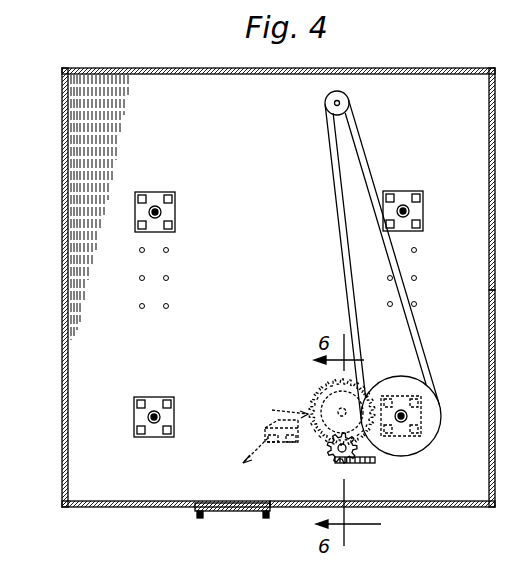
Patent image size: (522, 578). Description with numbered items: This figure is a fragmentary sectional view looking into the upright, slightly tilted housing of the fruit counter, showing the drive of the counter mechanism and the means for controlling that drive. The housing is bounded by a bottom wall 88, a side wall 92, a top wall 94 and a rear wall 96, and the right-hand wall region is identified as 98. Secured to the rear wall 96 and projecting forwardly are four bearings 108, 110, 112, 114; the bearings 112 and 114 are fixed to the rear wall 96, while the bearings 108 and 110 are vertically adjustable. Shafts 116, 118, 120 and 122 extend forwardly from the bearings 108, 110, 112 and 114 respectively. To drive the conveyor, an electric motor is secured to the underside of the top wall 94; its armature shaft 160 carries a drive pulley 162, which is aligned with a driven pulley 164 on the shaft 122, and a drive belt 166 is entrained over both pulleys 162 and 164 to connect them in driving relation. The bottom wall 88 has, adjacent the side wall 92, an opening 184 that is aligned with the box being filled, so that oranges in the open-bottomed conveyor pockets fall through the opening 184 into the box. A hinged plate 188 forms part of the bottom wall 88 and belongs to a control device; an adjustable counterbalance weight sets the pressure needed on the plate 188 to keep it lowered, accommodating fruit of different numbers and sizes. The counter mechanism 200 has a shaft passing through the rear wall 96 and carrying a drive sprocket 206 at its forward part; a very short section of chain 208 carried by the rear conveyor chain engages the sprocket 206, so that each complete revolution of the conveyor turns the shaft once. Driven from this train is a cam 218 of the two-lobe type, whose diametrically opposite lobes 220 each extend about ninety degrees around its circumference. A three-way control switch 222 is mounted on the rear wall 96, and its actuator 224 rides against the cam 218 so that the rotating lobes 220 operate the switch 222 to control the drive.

The bottom wall 88 is at (438, 507).
The side wall 92 is at (65, 340).
The top wall 94 is at (167, 66).
The rear wall 96 is at (477, 122).
The right wall lower portion 98 is at (490, 303).
The bearing 108 is at (175, 196).
The bearing 110 is at (424, 192).
The bearing 112 is at (174, 395).
The bearing 114 is at (430, 397).
The shaft 116 is at (161, 212).
The shaft 118 is at (404, 205).
The shaft 120 is at (153, 410).
The shaft 122 is at (405, 418).
The armature shaft 160 is at (341, 103).
The drive pulley 162 is at (325, 103).
The driven pulley 164 is at (418, 414).
The drive belt 166 is at (424, 352).
The opening 184 is at (117, 506).
The plate 188 is at (240, 509).
The counter mechanism 200 is at (302, 420).
The drive sprocket 206 is at (338, 450).
The section of chain 208 is at (366, 464).
The cam 218 is at (316, 393).
The lobes 220 is at (356, 384).
The three-way control switch 222 is at (265, 435).
The actuator 224 is at (274, 406).